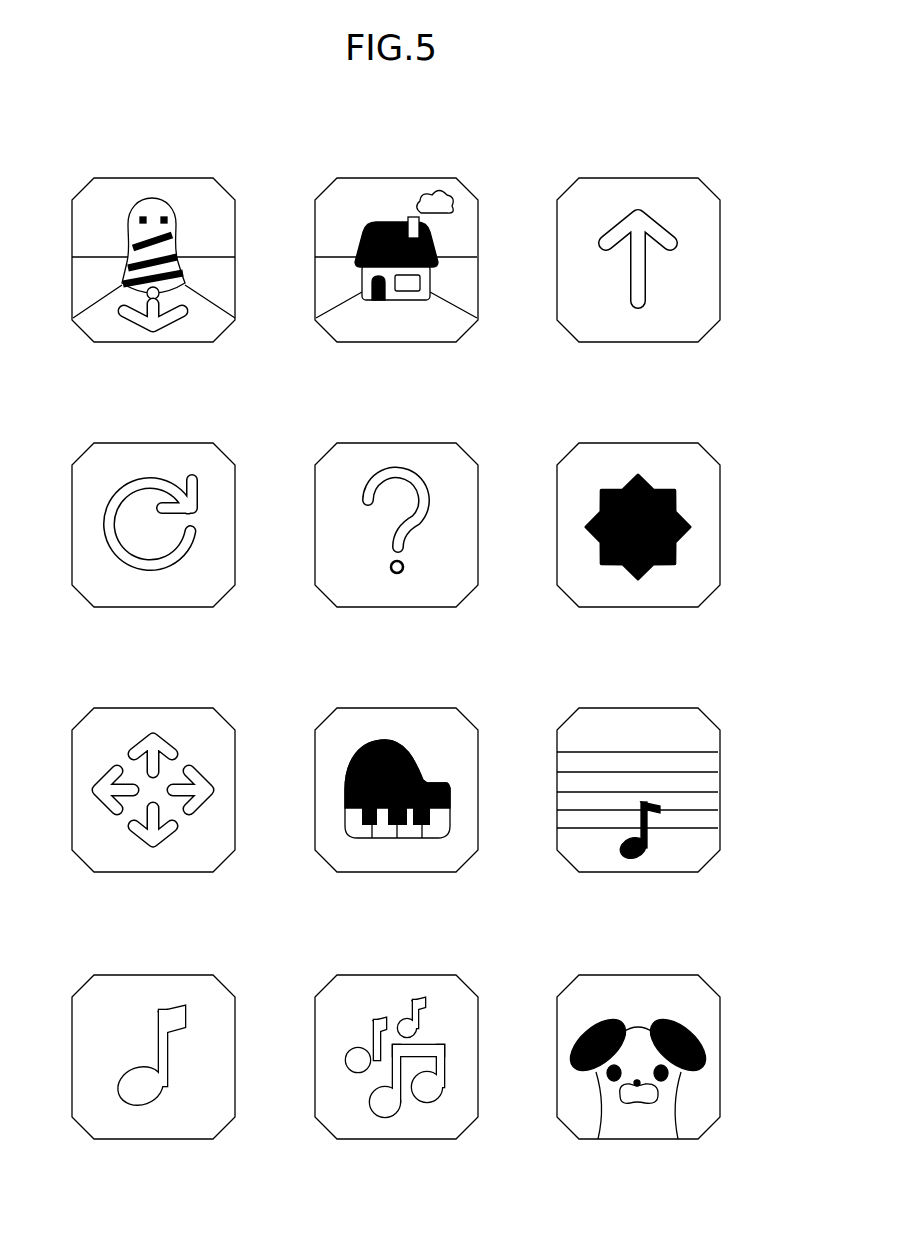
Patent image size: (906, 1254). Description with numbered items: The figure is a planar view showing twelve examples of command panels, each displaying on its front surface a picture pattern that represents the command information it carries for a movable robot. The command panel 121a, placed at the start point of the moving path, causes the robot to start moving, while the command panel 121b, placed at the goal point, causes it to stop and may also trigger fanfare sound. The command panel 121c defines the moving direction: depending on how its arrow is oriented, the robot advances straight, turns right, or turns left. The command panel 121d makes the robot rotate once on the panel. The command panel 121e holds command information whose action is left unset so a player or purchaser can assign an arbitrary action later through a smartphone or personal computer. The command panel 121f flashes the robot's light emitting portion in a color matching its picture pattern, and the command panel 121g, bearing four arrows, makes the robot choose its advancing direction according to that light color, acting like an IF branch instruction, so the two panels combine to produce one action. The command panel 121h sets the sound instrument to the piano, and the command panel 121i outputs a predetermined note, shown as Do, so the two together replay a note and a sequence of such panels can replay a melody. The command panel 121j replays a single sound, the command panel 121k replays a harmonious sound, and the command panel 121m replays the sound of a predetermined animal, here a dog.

The command panel 121a is at (177, 178).
The command panel 121b is at (432, 178).
The command panel 121c is at (672, 178).
The command panel 121d is at (175, 443).
The command panel 121e is at (430, 443).
The command panel 121f is at (673, 443).
The command panel 121g is at (175, 708).
The command panel 121h is at (430, 708).
The command panel 121i is at (672, 708).
The command panel 121j is at (175, 975).
The command panel 121k is at (430, 975).
The command panel 121m is at (673, 975).